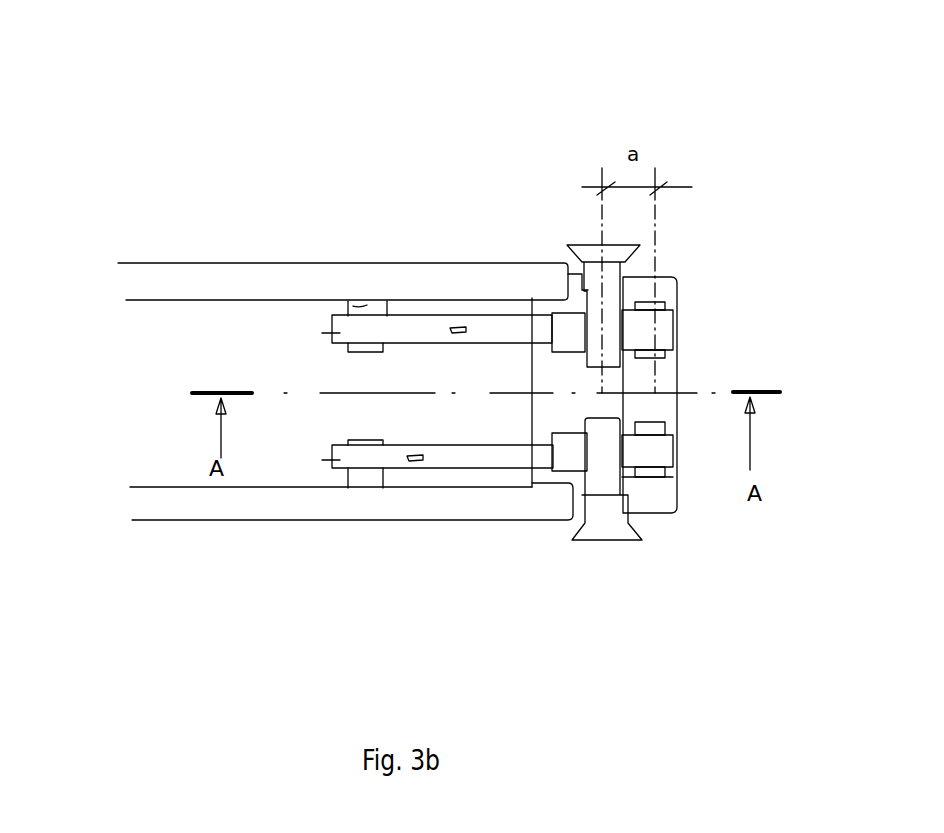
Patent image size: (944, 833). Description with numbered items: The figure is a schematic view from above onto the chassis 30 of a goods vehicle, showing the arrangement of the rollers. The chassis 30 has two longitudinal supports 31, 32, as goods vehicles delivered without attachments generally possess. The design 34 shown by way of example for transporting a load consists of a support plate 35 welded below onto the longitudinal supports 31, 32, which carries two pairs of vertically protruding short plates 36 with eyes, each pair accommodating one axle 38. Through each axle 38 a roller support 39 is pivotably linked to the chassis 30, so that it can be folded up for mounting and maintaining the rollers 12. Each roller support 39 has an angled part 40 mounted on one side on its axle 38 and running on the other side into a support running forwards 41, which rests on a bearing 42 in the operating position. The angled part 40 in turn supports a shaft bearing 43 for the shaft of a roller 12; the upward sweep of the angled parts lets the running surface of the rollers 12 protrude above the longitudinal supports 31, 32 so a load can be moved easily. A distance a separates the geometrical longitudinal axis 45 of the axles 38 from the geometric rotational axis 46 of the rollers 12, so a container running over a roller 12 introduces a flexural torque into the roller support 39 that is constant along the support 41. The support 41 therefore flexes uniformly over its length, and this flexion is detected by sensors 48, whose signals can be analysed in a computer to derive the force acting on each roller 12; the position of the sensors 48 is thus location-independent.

The roller 12 is at (592, 302).
The chassis 30 is at (323, 118).
The longitudinal support 31 is at (140, 287).
The longitudinal support 32 is at (153, 505).
The design 34 is at (746, 136).
The support plate 35 is at (563, 370).
The short plate 36 is at (673, 305).
The axle 38 is at (652, 303).
The roller support 39 is at (409, 290).
The angled part 40 is at (548, 315).
The support running forwards 41 is at (332, 334).
The bearing 42 is at (350, 312).
The shaft bearing 43 is at (577, 328).
The geometrical longitudinal axis 45 is at (660, 232).
The geometric rotational axis 46 is at (600, 243).
The sensor 48 is at (448, 330).